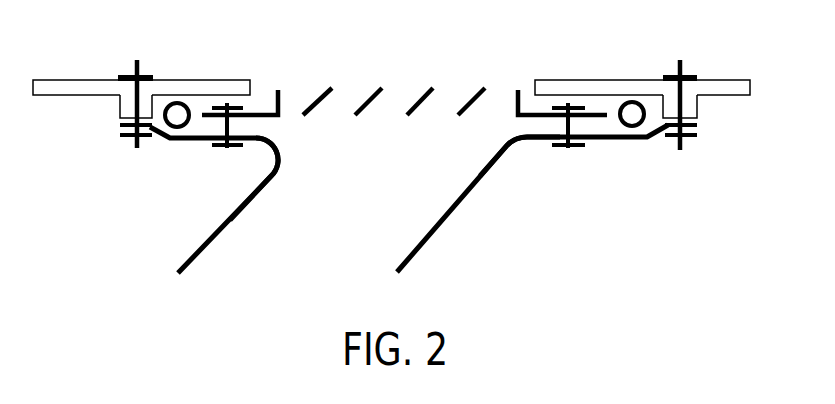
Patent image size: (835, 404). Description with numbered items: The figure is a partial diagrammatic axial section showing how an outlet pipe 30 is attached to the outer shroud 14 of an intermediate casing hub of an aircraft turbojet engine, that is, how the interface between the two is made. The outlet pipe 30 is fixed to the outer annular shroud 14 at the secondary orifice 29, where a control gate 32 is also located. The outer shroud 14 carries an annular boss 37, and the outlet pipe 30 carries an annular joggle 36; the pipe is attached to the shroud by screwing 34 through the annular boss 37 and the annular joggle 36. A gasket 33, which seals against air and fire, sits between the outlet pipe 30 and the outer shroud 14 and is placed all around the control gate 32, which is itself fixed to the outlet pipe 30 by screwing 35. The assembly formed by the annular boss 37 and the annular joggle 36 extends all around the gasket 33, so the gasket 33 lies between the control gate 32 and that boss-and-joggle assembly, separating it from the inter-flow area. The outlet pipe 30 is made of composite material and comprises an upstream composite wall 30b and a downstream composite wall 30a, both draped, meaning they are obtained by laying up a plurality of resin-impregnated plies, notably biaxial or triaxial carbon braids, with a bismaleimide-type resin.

The outer shroud 14 is at (78, 83).
The secondary orifice 29 is at (445, 103).
The outlet pipe 30 is at (190, 257).
The downstream composite wall 30a is at (521, 144).
The upstream composite wall 30b is at (232, 213).
The control gate 32 is at (368, 100).
The gasket 33 is at (177, 108).
The screwing 34 is at (133, 92).
The screwing 35 is at (222, 150).
The annular joggle 36 is at (158, 135).
The annular boss 37 is at (123, 105).